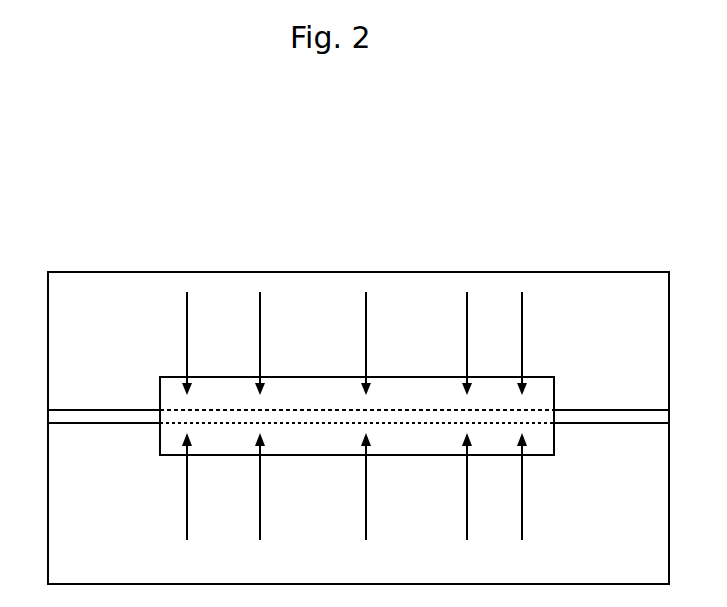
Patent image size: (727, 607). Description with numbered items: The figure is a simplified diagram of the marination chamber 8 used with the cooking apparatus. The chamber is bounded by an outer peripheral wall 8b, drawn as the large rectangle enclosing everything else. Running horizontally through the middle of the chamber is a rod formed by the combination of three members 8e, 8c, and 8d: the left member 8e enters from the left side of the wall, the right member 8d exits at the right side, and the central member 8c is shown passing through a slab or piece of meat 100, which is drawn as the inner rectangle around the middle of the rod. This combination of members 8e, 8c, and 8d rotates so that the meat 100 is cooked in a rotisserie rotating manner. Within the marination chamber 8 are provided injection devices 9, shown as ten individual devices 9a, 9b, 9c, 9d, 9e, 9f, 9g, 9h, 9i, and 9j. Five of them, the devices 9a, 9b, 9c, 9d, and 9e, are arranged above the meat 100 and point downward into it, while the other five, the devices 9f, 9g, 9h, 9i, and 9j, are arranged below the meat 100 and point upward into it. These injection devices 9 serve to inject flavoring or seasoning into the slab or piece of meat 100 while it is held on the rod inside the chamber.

The marination chamber 8 is at (509, 259).
The outer peripheral wall 8b is at (192, 270).
The rod member 8c is at (317, 418).
The rod member 8d is at (626, 419).
The rod member 8e is at (105, 418).
The injection devices 9 is at (326, 408).
The injection device 9a is at (187, 343).
The injection device 9b is at (260, 337).
The injection device 9c is at (366, 338).
The injection device 9d is at (467, 345).
The injection device 9e is at (522, 340).
The injection device 9f is at (187, 497).
The injection device 9g is at (260, 487).
The injection device 9h is at (366, 488).
The injection device 9i is at (467, 480).
The injection device 9j is at (522, 488).
The slab or piece of meat 100 is at (313, 388).